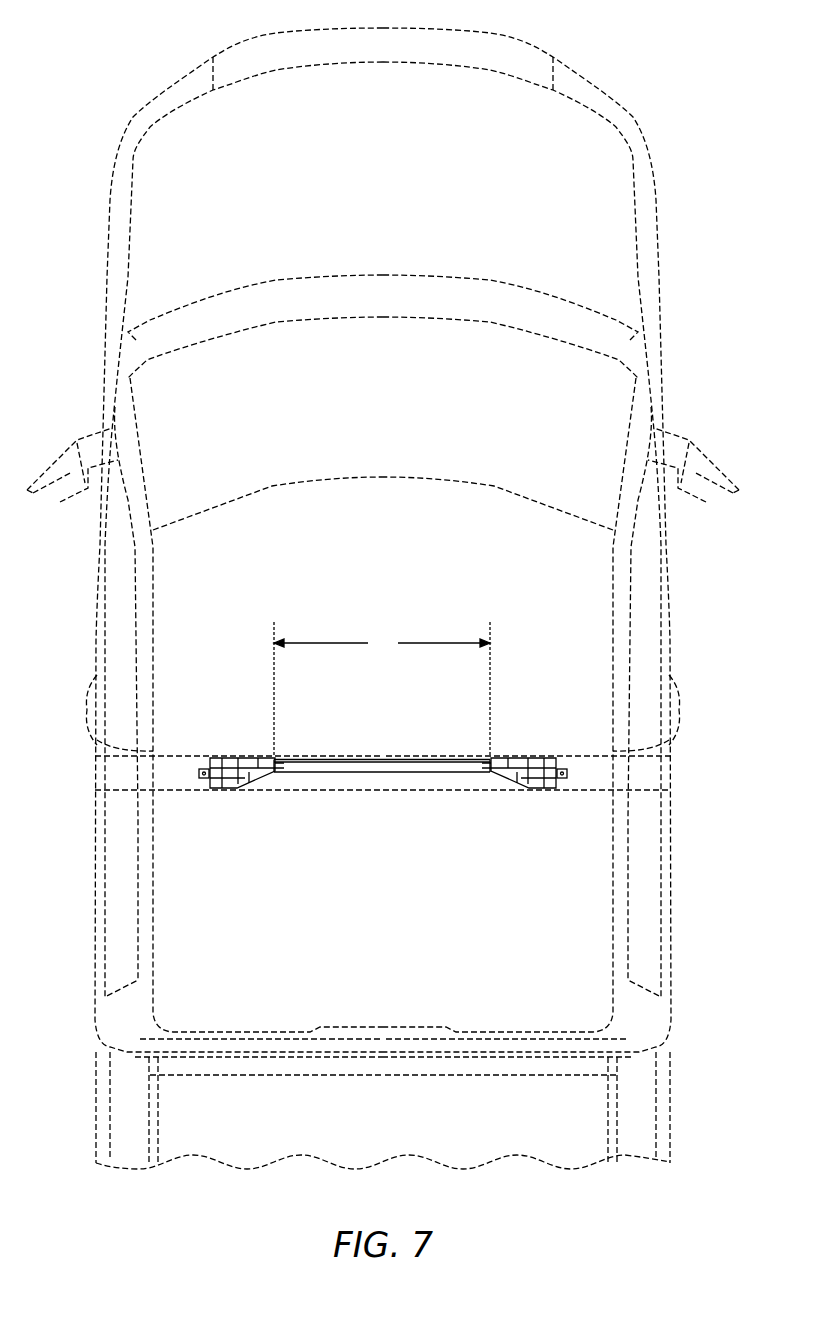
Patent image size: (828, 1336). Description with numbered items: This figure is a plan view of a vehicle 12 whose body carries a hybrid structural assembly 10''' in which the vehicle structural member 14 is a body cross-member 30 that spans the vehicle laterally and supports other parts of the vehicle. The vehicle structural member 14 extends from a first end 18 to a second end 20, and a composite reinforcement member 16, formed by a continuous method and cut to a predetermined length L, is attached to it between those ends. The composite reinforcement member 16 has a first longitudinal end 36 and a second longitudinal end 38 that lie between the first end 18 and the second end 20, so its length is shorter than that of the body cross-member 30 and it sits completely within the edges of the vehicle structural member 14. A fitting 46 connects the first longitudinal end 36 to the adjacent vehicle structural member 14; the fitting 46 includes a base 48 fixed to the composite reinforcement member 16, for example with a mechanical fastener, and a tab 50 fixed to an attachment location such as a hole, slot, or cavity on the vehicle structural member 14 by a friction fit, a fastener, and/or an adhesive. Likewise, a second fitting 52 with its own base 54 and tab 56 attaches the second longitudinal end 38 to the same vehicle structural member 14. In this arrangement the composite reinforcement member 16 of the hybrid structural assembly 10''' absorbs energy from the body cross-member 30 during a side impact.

The hybrid structural assembly 10''' is at (301, 710).
The vehicle 12 is at (118, 60).
The vehicle structural member 14 is at (297, 756).
The composite reinforcement member 16 is at (383, 762).
The first end 18 is at (216, 758).
The second end 20 is at (549, 758).
The body cross-member 30 is at (427, 791).
The first longitudinal end 36 is at (280, 766).
The second longitudinal end 38 is at (486, 766).
The fitting 46 is at (213, 790).
The base 48 is at (245, 788).
The tab 50 is at (198, 773).
The second fitting 52 is at (553, 790).
The base 54 is at (520, 788).
The tab 56 is at (568, 773).